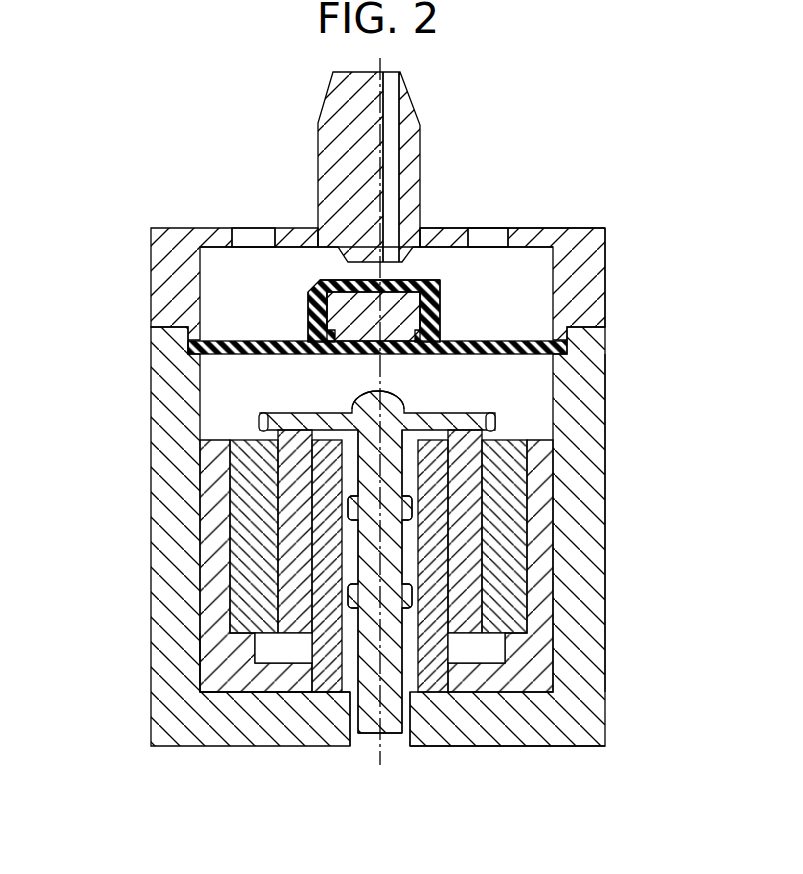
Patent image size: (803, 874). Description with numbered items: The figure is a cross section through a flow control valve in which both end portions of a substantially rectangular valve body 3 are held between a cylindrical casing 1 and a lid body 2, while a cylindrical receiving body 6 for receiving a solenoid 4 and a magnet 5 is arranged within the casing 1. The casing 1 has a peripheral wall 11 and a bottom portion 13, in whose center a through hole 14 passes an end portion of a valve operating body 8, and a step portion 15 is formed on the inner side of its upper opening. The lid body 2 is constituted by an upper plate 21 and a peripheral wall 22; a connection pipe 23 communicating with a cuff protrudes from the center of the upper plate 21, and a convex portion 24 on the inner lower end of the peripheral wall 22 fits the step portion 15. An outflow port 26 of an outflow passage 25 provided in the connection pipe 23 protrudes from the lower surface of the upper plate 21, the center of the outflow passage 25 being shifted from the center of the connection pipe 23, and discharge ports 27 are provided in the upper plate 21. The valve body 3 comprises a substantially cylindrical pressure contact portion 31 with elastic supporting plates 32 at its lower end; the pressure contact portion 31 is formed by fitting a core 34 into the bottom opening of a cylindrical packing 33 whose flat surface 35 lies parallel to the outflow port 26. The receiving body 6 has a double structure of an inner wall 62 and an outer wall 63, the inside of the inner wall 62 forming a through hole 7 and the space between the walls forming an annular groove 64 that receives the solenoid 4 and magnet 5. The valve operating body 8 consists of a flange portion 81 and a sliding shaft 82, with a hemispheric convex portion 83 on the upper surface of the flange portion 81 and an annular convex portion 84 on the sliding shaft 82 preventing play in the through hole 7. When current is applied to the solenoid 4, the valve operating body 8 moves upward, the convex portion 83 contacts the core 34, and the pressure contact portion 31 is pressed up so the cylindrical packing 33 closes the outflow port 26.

The cylindrical casing 1 is at (606, 446).
The lid body 2 is at (577, 222).
The valve body 3 is at (448, 332).
The solenoid 4 is at (288, 572).
The magnet 5 is at (245, 607).
The cylindrical receiving body 6 is at (213, 668).
The through hole 7 is at (322, 634).
The valve operating body 8 is at (449, 406).
The peripheral wall 11 is at (578, 572).
The bottom portion 13 is at (480, 720).
The through hole 14 is at (393, 746).
The step portion 15 is at (187, 352).
The upper plate 21 is at (533, 235).
The peripheral wall 22 is at (585, 283).
The connection pipe 23 is at (332, 145).
The convex portion 24 is at (212, 330).
The outflow passage 25 is at (387, 120).
The outflow port 26 is at (400, 233).
The discharge port 27 is at (240, 228).
The pressure contact portion 31 is at (437, 282).
The supporting plate 32 is at (522, 340).
The cylindrical packing 33 is at (310, 312).
The core 34 is at (325, 280).
The flat surface 35 is at (313, 230).
The inner wall 62 is at (248, 690).
The outer wall 63 is at (212, 503).
The annular groove 64 is at (490, 655).
The flange portion 81 is at (323, 422).
The sliding shaft 82 is at (370, 720).
The hemispheric convex portion 83 is at (372, 392).
The annular convex portion 84 is at (414, 504).